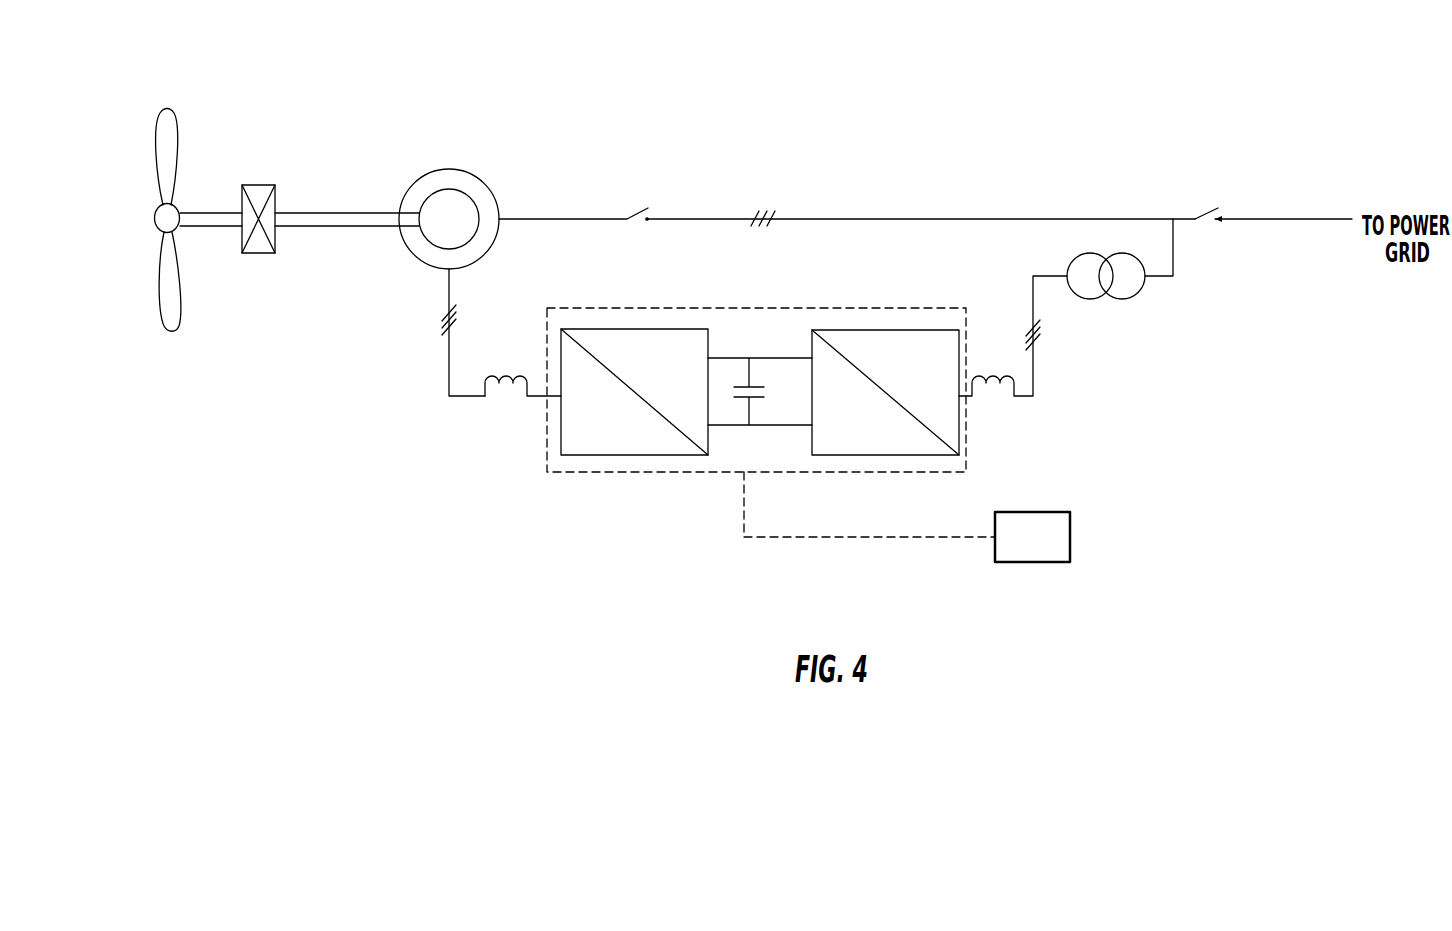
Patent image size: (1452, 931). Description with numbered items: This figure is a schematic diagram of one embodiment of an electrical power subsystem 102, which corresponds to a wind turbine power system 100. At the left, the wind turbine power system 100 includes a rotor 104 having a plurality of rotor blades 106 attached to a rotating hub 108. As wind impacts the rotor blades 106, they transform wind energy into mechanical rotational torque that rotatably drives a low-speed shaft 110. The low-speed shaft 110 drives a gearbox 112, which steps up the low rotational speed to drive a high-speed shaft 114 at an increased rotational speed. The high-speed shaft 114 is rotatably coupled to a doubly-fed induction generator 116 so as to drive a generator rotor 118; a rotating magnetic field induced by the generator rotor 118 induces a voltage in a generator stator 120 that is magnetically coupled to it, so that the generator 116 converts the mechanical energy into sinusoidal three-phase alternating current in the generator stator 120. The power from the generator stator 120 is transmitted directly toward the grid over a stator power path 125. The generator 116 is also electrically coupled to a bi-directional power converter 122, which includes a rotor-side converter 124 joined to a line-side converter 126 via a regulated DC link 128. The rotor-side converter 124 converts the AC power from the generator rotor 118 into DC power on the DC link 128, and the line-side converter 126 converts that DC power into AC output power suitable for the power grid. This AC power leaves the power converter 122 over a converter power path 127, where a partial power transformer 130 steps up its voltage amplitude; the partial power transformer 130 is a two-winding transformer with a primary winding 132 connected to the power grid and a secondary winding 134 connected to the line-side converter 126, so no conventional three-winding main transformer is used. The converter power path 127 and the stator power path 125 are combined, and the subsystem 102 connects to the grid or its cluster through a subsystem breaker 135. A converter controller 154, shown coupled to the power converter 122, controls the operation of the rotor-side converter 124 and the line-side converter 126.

The wind turbine power system 100 is at (187, 70).
The electrical power subsystem 102 is at (1104, 94).
The rotor 104 is at (153, 243).
The rotor blades 106 is at (167, 144).
The rotating hub 108 is at (157, 233).
The low-speed shaft 110 is at (197, 222).
The gearbox 112 is at (257, 185).
The high-speed shaft 114 is at (328, 222).
The doubly-fed induction generator 116 is at (438, 201).
The generator rotor 118 is at (426, 242).
The generator stator 120 is at (413, 187).
The bi-directional power converter 122 is at (704, 393).
The rotor-side converter 124 is at (627, 329).
The stator power path 125 is at (821, 219).
The line-side converter 126 is at (873, 330).
The converter power path 127 is at (1035, 367).
The regulated DC link 128 is at (757, 345).
The partial power transformer 130 is at (1109, 290).
The primary winding 132 is at (1142, 268).
The secondary winding 134 is at (1077, 255).
The subsystem breaker 135 is at (1230, 205).
The converter controller 154 is at (1047, 553).